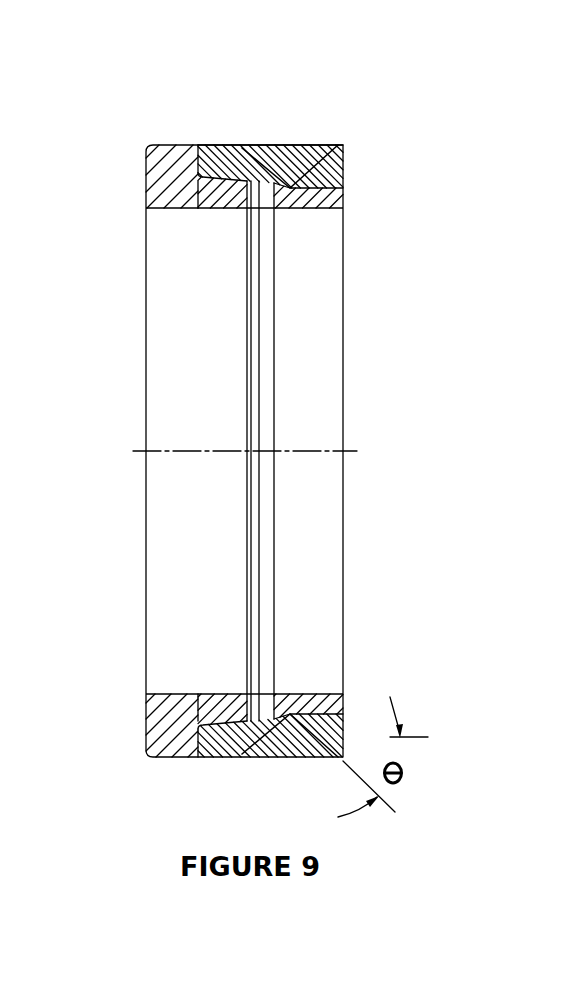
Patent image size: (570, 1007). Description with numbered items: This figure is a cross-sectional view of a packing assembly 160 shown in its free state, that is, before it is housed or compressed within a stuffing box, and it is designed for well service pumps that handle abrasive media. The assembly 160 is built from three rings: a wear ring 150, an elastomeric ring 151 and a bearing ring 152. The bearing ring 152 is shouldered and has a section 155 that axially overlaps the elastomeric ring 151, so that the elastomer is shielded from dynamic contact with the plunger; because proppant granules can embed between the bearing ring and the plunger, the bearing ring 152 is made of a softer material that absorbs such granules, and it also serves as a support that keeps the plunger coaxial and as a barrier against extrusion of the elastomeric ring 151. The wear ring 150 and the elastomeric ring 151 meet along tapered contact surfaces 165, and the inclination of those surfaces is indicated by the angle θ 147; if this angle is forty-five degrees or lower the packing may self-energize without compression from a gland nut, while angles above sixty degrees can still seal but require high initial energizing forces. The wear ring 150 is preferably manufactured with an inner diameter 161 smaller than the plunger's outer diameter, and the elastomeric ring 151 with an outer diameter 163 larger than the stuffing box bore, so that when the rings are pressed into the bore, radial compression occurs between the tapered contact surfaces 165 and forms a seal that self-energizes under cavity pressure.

The angle θ 147 is at (418, 773).
The wear ring 150 is at (333, 183).
The elastomeric ring 151 is at (302, 155).
The bearing ring 152 is at (167, 156).
The section 155 is at (240, 180).
The packing assembly 160 is at (263, 102).
The inner diameter 161 is at (306, 210).
The outer diameter 163 is at (258, 147).
The tapered contact surfaces 165 is at (320, 731).